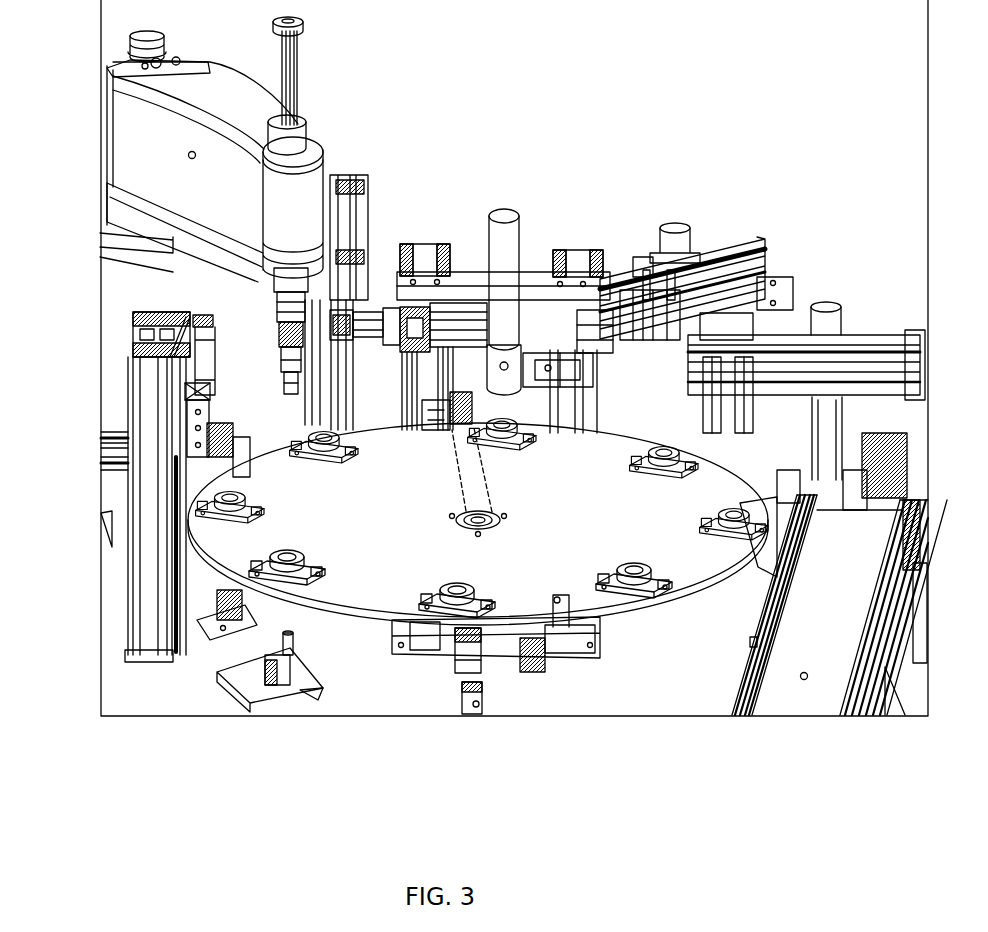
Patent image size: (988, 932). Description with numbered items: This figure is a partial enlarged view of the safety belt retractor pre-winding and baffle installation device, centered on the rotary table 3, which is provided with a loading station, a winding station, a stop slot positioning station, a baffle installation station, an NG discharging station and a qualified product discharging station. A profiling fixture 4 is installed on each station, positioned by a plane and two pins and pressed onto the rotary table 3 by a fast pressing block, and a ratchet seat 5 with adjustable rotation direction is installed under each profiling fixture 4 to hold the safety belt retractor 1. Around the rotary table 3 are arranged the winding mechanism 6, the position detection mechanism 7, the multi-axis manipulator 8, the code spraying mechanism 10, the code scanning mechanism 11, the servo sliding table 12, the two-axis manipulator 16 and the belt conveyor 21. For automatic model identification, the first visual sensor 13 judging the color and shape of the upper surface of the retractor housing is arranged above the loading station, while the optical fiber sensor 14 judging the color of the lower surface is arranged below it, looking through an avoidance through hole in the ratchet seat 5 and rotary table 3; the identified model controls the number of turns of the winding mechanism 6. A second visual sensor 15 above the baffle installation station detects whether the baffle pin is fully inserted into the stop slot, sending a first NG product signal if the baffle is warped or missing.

The safety belt retractor 1 is at (190, 525).
The rotary table 3 is at (559, 603).
The profiling fixture 4 is at (447, 505).
The ratchet seat 5 is at (462, 675).
The winding mechanism 6 is at (226, 628).
The position detection mechanism 7 is at (183, 428).
The multi-axis manipulator 8 is at (189, 157).
The code spraying mechanism 10 is at (507, 360).
The code scanning mechanism 11 is at (566, 340).
The servo sliding table 12 is at (431, 268).
The first visual sensor 13 is at (459, 432).
The optical fiber sensor 14 is at (485, 708).
The second visual sensor 15 is at (343, 228).
The two-axis manipulator 16 is at (715, 243).
The belt conveyor 21 is at (807, 680).